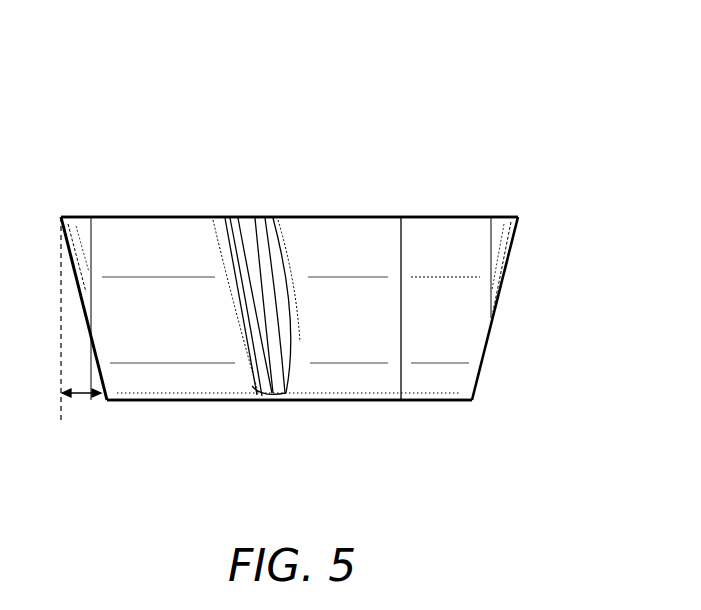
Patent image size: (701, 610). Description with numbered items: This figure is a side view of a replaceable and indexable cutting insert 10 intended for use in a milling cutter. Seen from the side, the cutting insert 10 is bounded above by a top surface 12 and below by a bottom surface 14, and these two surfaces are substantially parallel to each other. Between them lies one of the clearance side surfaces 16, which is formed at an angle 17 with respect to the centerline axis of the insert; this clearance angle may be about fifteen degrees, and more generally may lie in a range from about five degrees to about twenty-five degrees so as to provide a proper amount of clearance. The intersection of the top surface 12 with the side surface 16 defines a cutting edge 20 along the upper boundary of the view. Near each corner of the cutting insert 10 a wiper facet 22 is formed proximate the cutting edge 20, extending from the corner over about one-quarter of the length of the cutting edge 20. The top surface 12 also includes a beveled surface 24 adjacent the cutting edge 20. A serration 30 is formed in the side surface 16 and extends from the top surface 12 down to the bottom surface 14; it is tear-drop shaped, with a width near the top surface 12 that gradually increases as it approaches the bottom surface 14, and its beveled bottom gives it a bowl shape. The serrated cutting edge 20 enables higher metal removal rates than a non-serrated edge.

The cutting insert 10 is at (587, 86).
The top surface 12 is at (152, 217).
The bottom surface 14 is at (158, 400).
The clearance side surface 16 is at (175, 335).
The angle 17 is at (81, 394).
The cutting edge 20 is at (350, 217).
The wiper facet 22 is at (432, 217).
The beveled surface 24 is at (112, 217).
The serration 30 is at (248, 254).